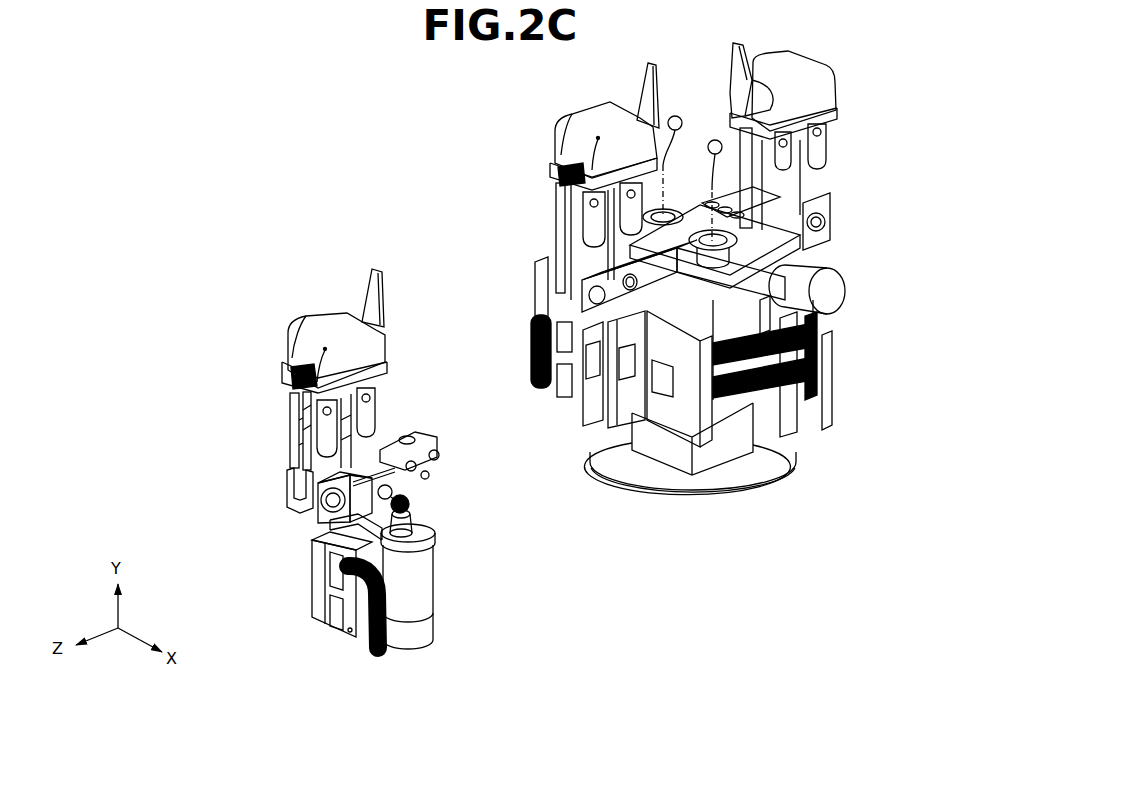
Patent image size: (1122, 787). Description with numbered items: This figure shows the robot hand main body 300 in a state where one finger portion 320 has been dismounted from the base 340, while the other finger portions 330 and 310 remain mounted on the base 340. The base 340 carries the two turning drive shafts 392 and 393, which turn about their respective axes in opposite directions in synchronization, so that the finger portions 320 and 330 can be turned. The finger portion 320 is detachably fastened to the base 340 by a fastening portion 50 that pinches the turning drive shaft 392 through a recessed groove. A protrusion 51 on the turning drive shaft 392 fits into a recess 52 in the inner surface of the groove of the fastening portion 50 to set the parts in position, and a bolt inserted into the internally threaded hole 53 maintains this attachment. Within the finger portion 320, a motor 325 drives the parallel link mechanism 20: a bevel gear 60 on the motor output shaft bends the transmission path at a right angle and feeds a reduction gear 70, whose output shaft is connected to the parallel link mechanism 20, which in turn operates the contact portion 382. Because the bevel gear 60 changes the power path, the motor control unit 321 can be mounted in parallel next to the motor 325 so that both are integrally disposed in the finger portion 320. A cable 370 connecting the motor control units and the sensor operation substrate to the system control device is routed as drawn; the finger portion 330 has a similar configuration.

The robot hand main body 300 is at (350, 121).
The finger portion 320 is at (206, 272).
The parallel link mechanism 20 is at (289, 446).
The contact portion 382 is at (370, 283).
The fastening portion 50 is at (447, 446).
The recess 52 is at (416, 468).
The internally threaded hole 53 is at (429, 480).
The reduction gear 70 is at (357, 502).
The bevel gear 60 is at (431, 512).
The motor 325 is at (412, 588).
The motor control unit 321 is at (320, 607).
The cable 370 is at (364, 650).
The finger portion 310 is at (892, 45).
The finger portion 330 is at (517, 65).
The turning drive shaft 393 is at (658, 208).
The turning drive shaft 392 is at (762, 212).
The protrusion 51 is at (762, 264).
The base 340 is at (736, 456).